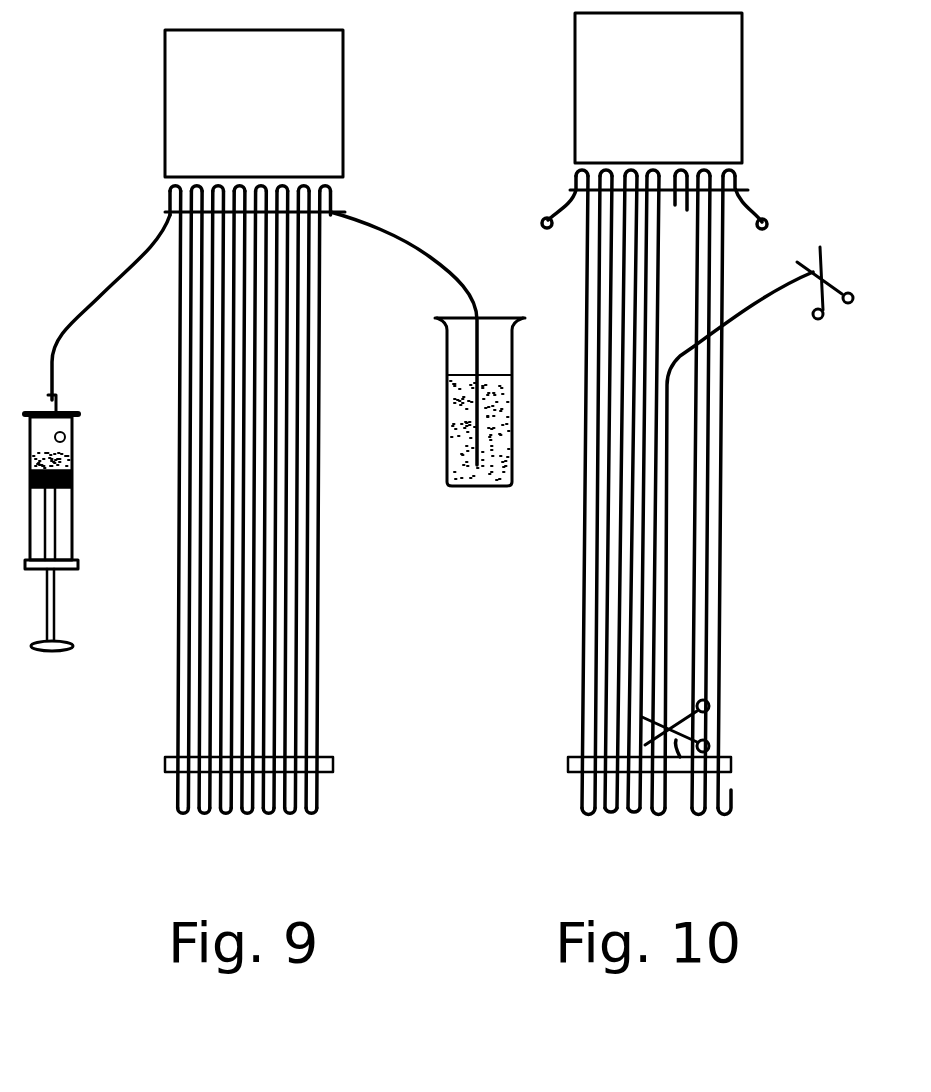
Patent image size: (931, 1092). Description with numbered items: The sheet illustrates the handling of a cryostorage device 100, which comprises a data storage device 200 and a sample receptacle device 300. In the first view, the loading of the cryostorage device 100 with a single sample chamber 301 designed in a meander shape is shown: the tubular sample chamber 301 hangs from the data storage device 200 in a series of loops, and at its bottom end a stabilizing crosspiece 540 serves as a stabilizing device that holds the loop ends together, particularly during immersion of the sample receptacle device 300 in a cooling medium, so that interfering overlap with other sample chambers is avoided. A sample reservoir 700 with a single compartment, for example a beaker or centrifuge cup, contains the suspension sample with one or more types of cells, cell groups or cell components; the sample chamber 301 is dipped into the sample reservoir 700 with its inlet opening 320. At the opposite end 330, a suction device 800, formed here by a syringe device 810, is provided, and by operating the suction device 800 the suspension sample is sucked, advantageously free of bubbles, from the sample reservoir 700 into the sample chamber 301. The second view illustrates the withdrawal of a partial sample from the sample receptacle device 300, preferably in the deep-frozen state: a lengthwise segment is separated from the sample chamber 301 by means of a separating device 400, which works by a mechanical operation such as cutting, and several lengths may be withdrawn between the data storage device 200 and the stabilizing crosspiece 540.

In FIG. 9, the cryostorage device 100 is at (264, 512).
In FIG. 9, the data storage device 200 is at (275, 129).
In FIG. 10, the data storage device 200 is at (675, 120).
In FIG. 10, the sample receptacle device 300 is at (659, 503).
In FIG. 9, the sample chamber 301 is at (320, 640).
In FIG. 10, the sample chamber 301 is at (730, 455).
In FIG. 9, the inlet opening 320 is at (445, 477).
In FIG. 9, the opposite end 330 is at (56, 357).
In FIG. 10, the separating device 400 is at (850, 365).
In FIG. 9, the stabilizing crosspiece 540 is at (163, 762).
In FIG. 10, the stabilizing crosspiece 540 is at (568, 762).
In FIG. 9, the sample reservoir 700 is at (530, 542).
In FIG. 9, the suction device 800 is at (85, 551).
In FIG. 9, the syringe device 810 is at (73, 515).